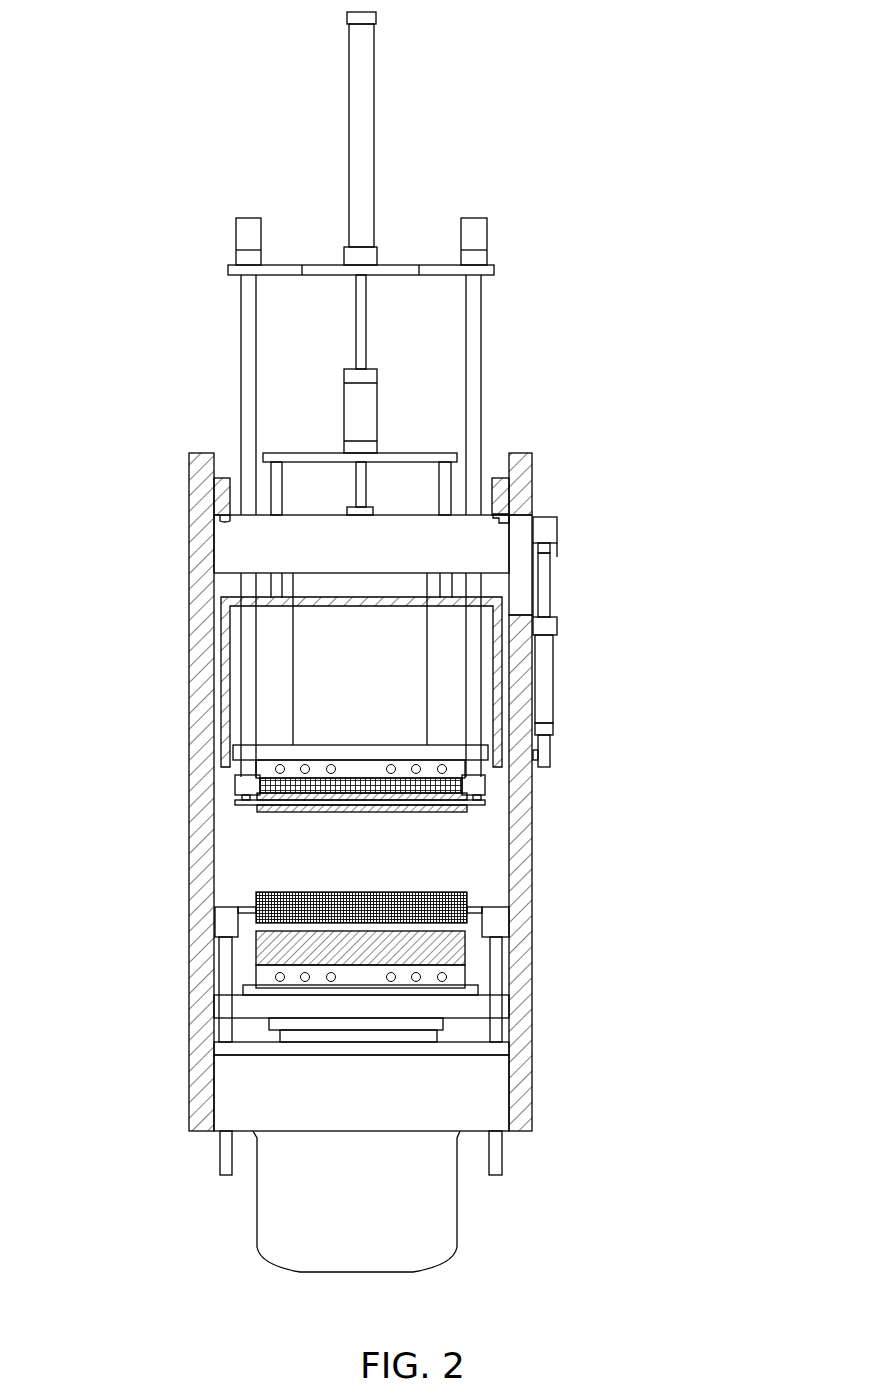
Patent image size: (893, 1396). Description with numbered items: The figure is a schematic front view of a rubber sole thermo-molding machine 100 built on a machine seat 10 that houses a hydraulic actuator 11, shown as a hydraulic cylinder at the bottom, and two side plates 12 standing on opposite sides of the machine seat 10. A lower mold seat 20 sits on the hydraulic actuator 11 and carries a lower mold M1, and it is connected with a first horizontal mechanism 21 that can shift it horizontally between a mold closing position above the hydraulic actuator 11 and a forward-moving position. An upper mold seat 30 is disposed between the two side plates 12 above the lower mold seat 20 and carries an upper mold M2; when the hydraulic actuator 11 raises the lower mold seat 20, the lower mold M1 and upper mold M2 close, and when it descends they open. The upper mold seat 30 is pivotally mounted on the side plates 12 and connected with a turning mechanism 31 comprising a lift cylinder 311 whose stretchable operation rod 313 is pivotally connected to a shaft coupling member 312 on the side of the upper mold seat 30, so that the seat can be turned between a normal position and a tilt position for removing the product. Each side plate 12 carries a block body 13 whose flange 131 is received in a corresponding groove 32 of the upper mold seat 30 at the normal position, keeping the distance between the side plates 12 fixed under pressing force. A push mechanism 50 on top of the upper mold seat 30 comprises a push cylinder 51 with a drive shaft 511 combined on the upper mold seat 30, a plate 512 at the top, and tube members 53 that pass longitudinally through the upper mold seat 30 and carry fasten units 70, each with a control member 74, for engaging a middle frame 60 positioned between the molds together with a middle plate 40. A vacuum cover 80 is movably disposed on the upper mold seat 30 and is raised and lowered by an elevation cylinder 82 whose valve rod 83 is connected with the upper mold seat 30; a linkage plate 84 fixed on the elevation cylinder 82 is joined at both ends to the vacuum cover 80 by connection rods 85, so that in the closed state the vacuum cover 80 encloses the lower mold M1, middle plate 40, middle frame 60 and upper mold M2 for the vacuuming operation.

The rubber sole thermo-molding machine 100 is at (782, 33).
The machine seat 10 is at (377, 851).
The hydraulic actuator 11 is at (430, 1215).
The side plates 12 is at (200, 715).
The block body 13 is at (500, 483).
The flange 131 is at (513, 516).
The lower mold seat 20 is at (262, 978).
The first horizontal mechanism 21 is at (252, 990).
The upper mold seat 30 is at (230, 559).
The turning mechanism 31 is at (589, 642).
The lift cylinder 311 is at (545, 683).
The shaft coupling member 312 is at (520, 530).
The operation rod 313 is at (543, 592).
The groove 32 is at (210, 505).
The middle plate 40 is at (262, 907).
The push mechanism 50 is at (353, 394).
The push cylinder 51 is at (363, 130).
The drive shaft 511 is at (360, 322).
The top plate 512 is at (437, 267).
The tube members 53 is at (473, 400).
The middle frame 60 is at (263, 808).
The fasten unit 70 is at (219, 781).
The control member 74 is at (243, 237).
The vacuum cover 80 is at (223, 665).
The elevation cylinder 82 is at (352, 400).
The valve rod 83 is at (362, 487).
The linkage plate 84 is at (277, 457).
The connection rod 85 is at (275, 500).
The lower mold M1 is at (457, 952).
The upper mold M2 is at (433, 787).